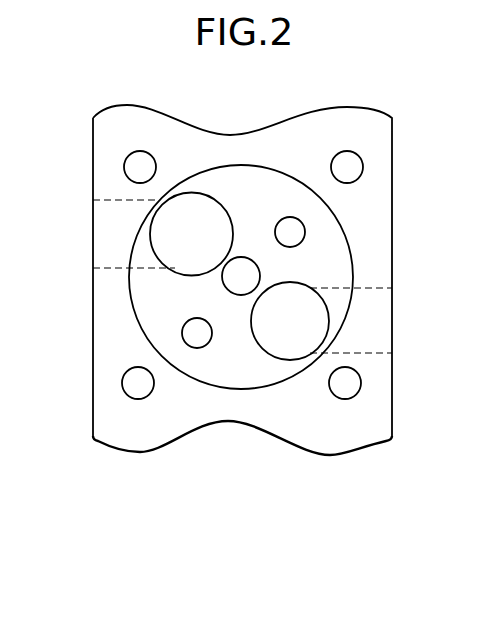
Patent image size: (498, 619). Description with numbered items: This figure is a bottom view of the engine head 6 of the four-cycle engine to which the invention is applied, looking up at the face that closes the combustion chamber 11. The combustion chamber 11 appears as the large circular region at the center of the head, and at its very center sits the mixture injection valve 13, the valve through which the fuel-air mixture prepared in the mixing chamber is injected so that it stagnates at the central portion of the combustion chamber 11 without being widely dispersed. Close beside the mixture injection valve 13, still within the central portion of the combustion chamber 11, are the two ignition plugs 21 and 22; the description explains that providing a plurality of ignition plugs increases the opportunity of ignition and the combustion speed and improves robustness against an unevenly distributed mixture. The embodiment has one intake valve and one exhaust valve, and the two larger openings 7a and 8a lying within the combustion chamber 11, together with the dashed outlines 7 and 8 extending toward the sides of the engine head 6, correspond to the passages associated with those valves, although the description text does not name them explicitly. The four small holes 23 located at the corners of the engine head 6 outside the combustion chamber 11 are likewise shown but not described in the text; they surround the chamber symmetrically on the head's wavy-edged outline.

The engine head 6 is at (186, 145).
The first port 7 is at (110, 218).
The first port opening 7a is at (170, 243).
The second port 8 is at (368, 313).
The second port opening 8a is at (312, 322).
The combustion chamber 11 is at (237, 373).
The mixture injection valve 13 is at (237, 280).
The ignition plug 21 is at (192, 332).
The ignition plug 22 is at (295, 233).
The bolt holes 23 is at (124, 166).